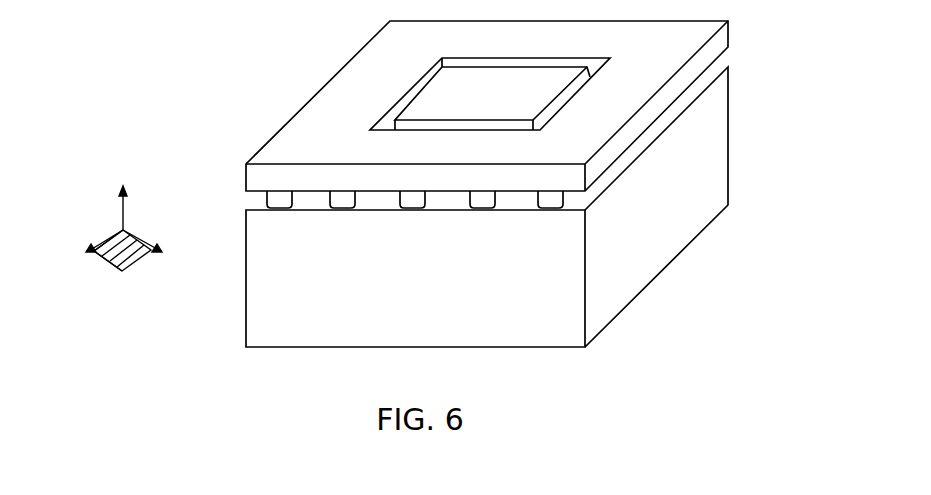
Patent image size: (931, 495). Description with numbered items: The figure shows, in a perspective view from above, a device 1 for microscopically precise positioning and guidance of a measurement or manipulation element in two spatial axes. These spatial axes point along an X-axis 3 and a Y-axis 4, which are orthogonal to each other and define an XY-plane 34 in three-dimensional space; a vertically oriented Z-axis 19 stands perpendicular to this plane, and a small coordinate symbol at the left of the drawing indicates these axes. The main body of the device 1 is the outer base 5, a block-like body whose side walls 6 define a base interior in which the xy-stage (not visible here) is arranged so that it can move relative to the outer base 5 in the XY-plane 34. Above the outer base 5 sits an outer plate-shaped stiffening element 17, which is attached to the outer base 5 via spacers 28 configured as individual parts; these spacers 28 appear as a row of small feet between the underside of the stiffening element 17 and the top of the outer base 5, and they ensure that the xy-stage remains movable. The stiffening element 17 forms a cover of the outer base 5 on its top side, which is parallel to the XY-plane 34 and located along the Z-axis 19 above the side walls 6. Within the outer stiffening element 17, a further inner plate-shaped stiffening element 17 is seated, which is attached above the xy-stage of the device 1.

The device 1 is at (243, 38).
The X-axis 3 is at (102, 240).
The Y-axis 4 is at (108, 259).
The outer base 5 is at (483, 208).
The side walls 6 is at (262, 305).
The stiffening element 17 is at (472, 88).
The Z-axis 19 is at (117, 242).
The spacers 28 is at (280, 199).
The XY-plane 34 is at (112, 262).